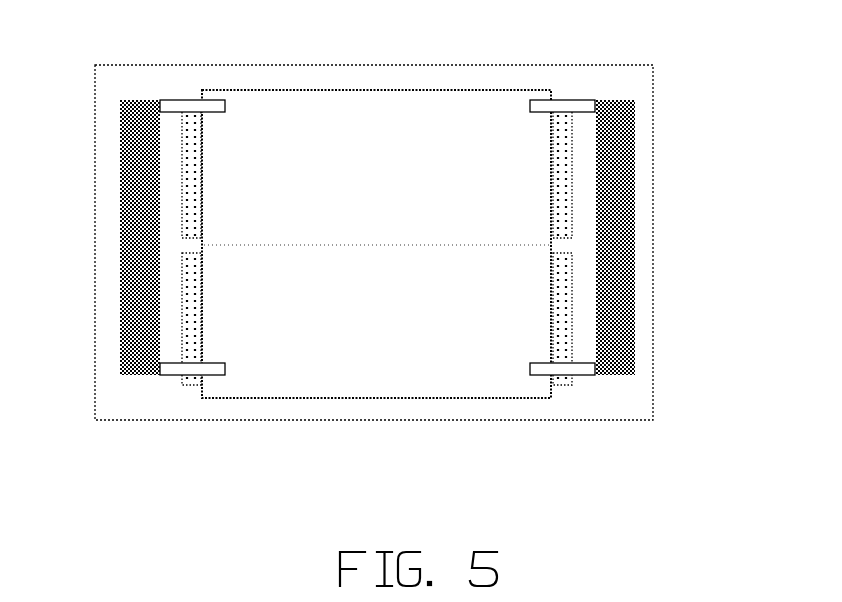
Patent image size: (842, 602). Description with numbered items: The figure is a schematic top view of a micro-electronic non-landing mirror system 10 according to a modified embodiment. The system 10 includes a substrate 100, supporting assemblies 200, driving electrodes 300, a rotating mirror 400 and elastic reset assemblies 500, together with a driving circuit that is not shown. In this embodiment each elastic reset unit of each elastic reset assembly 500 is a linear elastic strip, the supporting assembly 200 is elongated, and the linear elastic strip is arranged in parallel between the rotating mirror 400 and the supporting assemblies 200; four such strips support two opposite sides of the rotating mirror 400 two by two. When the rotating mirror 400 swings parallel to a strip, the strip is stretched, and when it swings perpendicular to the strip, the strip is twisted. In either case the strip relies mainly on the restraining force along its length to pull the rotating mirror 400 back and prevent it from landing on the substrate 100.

The micro-electronic non-landing mirror system 10 is at (413, 262).
The substrate 100 is at (566, 415).
The supporting assembly 200 is at (134, 238).
The driving electrodes 300 is at (580, 325).
The rotating mirror 400 is at (428, 352).
The elastic reset assembly 500 is at (580, 105).